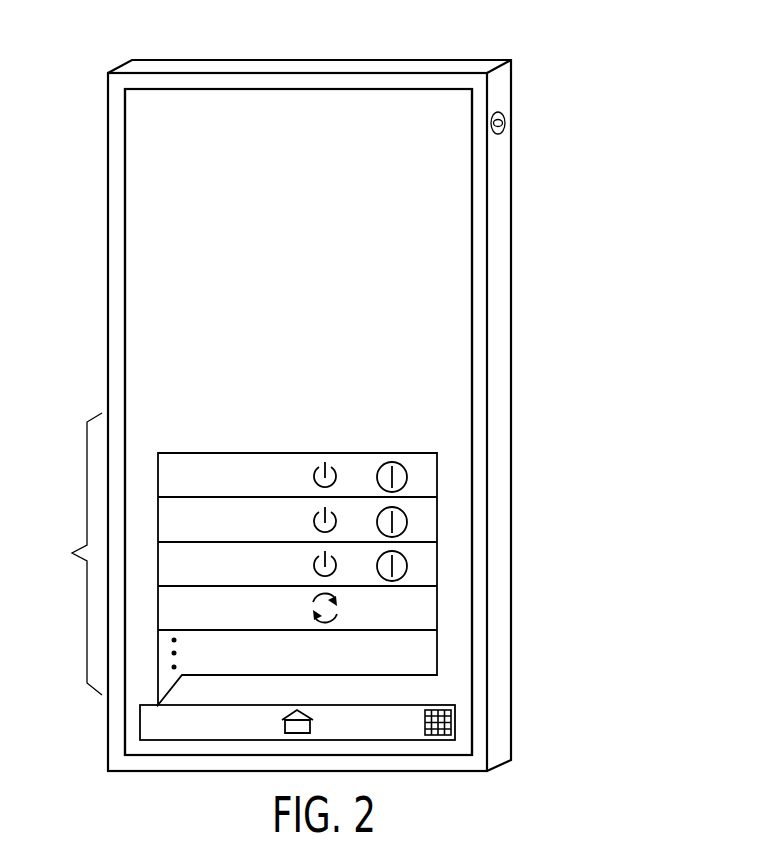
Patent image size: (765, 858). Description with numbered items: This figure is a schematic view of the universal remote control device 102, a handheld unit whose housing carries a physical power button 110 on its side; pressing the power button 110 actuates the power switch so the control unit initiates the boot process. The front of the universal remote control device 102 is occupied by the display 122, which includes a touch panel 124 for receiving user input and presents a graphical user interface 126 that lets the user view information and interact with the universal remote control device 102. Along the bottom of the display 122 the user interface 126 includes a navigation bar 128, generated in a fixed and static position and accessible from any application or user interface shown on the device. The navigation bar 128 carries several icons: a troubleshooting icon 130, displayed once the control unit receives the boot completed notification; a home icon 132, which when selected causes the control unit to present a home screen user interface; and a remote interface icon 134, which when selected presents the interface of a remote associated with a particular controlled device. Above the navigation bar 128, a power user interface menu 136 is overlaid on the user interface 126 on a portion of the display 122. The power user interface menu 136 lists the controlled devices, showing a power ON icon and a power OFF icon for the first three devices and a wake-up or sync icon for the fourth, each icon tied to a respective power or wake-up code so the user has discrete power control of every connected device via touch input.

The universal remote control device 102 is at (490, 48).
The power button 110 is at (505, 118).
The display 122 is at (410, 89).
The touch panel 124 is at (453, 210).
The user interface 126 is at (157, 236).
The navigation bar 128 is at (201, 744).
The troubleshooting icon 130 is at (153, 729).
The home icon 132 is at (312, 733).
The remote interface icon 134 is at (452, 722).
The power user interface menu 136 is at (232, 559).